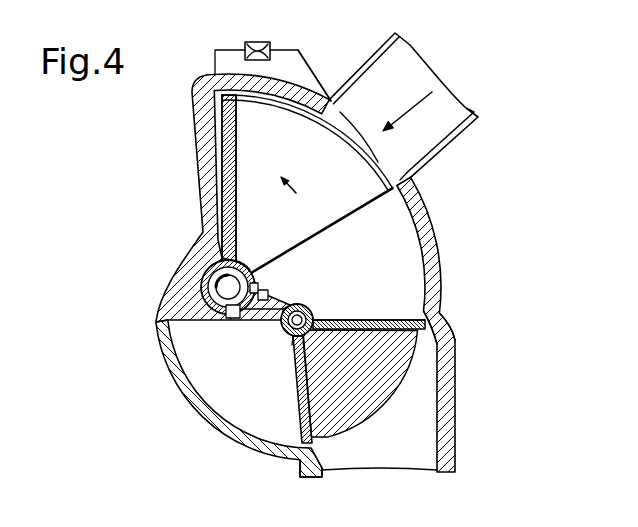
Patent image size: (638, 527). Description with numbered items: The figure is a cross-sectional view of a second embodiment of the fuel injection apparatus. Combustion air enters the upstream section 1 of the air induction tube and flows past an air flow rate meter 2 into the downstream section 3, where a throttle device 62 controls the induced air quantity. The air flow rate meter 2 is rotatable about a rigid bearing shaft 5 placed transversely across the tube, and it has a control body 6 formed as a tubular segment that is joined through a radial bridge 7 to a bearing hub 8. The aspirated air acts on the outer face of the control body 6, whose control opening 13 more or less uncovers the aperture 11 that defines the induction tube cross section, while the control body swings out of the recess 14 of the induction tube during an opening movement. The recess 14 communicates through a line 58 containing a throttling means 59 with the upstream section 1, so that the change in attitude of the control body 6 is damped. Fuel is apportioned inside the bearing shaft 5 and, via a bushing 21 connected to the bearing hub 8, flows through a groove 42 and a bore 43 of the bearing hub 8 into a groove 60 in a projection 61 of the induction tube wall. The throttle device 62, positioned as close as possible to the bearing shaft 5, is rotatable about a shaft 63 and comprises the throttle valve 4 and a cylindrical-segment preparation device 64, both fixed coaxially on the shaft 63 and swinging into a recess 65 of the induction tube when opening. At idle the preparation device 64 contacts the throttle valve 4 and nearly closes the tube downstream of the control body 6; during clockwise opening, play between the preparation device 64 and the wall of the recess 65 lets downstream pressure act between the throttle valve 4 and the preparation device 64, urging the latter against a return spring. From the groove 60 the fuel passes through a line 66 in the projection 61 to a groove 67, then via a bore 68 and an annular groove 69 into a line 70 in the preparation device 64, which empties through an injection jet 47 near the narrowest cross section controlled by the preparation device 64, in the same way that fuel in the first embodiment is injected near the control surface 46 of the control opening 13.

The section of the air induction tube 1 is at (479, 118).
The air flow rate meter 2 is at (352, 228).
The section of the air induction tube 3 is at (414, 277).
The throttle valve 4 is at (298, 457).
The bearing shaft 5 is at (222, 282).
The control body 6 is at (378, 162).
The radial bridge 7 is at (240, 177).
The bearing hub 8 is at (247, 256).
The aperture 11 is at (415, 181).
The control opening 13 is at (277, 106).
The recess 14 is at (216, 122).
The bushing 21 is at (204, 288).
The groove 42 is at (258, 284).
The bore 43 is at (268, 292).
The control surface 46 is at (319, 124).
The injection jet 47 is at (445, 320).
The line 58 is at (305, 58).
The throttling means 59 is at (250, 42).
The groove 60 is at (232, 318).
The projection 61 is at (247, 320).
The throttle device 62 is at (388, 442).
The shaft 63 is at (297, 383).
The preparation device 64 is at (402, 358).
The recess 65 is at (206, 388).
The line 66 is at (259, 321).
The groove 67 is at (307, 306).
The bore 68 is at (292, 340).
The annular groove 69 is at (364, 320).
The line 70 is at (382, 320).